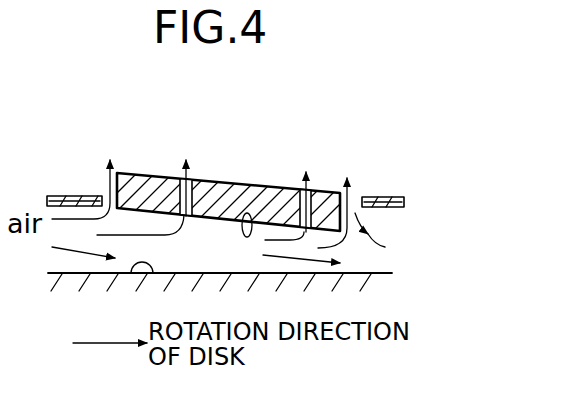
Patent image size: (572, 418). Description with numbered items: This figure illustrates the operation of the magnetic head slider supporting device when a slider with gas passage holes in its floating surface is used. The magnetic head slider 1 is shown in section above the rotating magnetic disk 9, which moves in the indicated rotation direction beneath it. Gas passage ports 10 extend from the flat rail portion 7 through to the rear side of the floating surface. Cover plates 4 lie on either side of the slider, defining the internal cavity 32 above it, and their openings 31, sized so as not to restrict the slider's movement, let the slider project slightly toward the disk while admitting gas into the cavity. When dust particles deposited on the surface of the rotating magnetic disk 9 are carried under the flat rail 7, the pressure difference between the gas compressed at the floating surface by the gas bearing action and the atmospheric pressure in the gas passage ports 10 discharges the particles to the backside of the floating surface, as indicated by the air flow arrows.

The internal cavity 32 is at (260, 93).
The magnetic head slider 1 is at (227, 183).
The gas passage ports 10 is at (180, 174).
The flat rail portion 7 is at (244, 213).
The openings 31 is at (355, 200).
The cover plates 4 is at (390, 195).
The rotating magnetic disk 9 is at (130, 273).